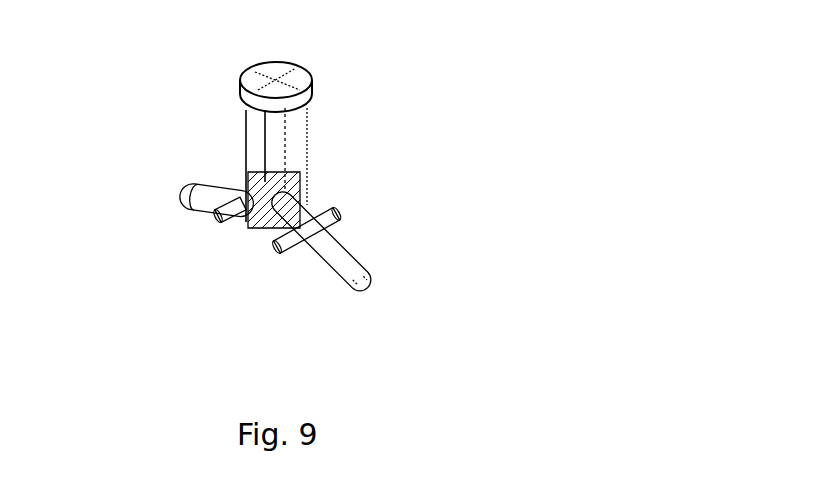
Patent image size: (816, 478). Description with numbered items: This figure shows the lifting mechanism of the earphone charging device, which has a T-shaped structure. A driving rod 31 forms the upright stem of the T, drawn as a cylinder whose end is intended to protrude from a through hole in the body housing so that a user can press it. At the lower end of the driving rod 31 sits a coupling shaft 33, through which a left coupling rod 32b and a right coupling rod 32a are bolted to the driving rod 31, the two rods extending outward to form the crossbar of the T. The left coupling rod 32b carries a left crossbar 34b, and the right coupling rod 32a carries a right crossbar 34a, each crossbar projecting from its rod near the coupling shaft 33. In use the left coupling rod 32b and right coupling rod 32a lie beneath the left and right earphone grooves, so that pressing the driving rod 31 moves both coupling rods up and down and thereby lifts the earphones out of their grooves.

The driving rod 31 is at (292, 143).
The right coupling rod 32a is at (328, 265).
The left coupling rod 32b is at (190, 214).
The coupling shaft 33 is at (253, 223).
The right crossbar 34a is at (287, 257).
The left crossbar 34b is at (220, 222).